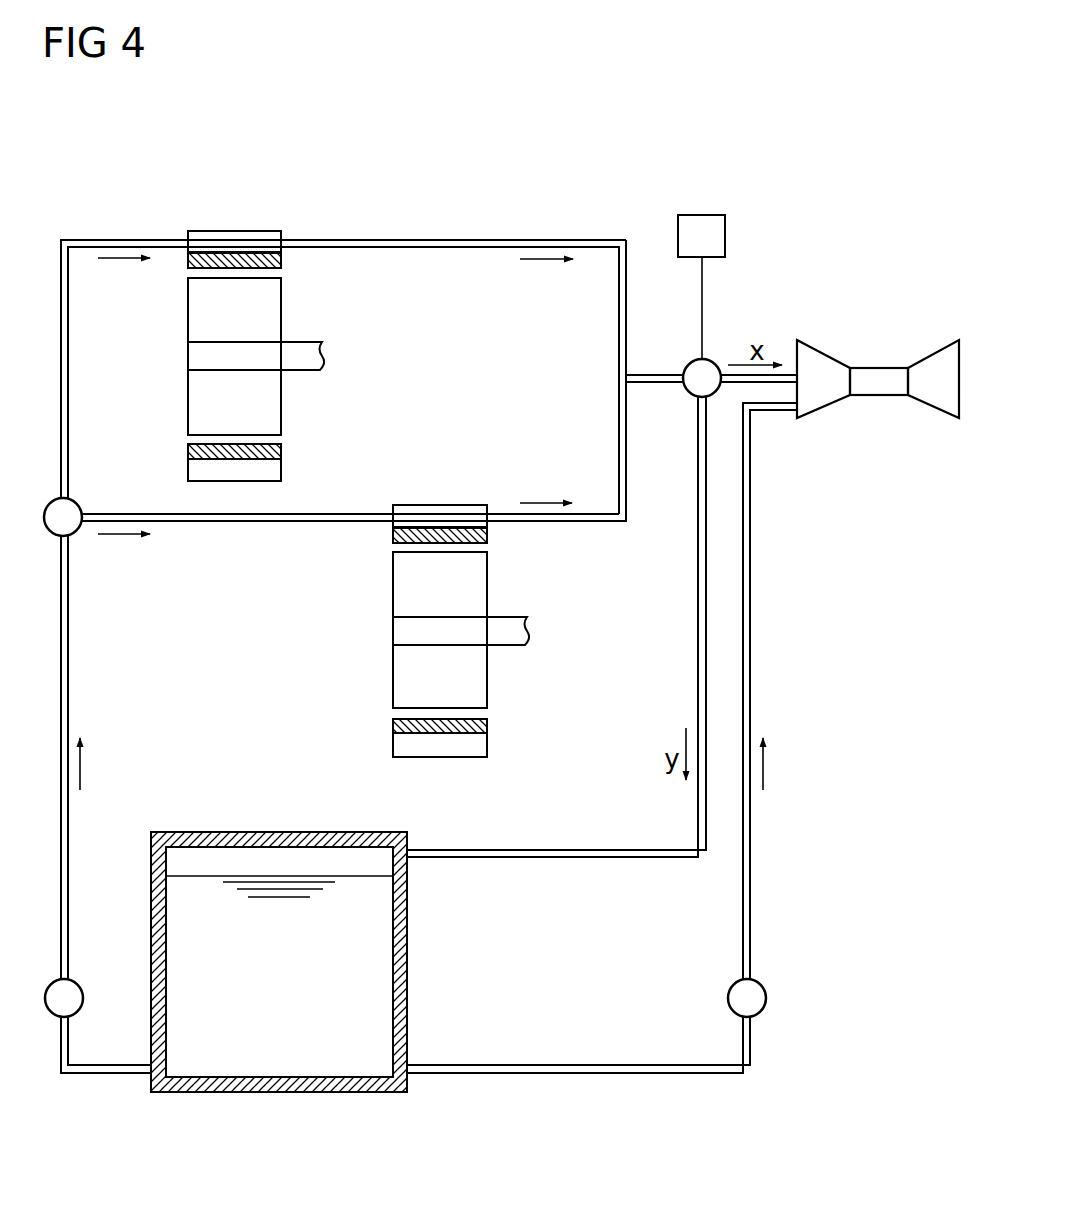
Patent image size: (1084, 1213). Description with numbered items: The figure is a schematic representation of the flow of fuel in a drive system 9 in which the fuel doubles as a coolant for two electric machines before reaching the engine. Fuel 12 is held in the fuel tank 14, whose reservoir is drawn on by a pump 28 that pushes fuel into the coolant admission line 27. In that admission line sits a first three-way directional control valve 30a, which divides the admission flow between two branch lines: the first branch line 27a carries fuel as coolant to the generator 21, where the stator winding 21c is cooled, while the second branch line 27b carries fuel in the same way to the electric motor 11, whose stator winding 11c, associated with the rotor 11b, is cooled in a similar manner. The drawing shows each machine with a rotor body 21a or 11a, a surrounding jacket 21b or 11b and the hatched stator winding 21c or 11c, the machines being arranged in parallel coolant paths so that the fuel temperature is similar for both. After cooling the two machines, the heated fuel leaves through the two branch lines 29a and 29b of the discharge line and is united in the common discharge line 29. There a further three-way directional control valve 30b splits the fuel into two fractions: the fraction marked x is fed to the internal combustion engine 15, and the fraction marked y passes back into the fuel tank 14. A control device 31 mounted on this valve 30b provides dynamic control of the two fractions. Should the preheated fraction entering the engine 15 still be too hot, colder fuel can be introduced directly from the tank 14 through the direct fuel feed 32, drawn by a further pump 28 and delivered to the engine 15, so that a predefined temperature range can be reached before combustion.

The drive system 9 is at (104, 172).
The electric motor 11 is at (485, 598).
The rotor of second electric machine 11a is at (488, 575).
The rotor 11b is at (488, 507).
The stator winding 11c is at (488, 534).
The fuel 12 is at (265, 1016).
The fuel tank 14 is at (289, 1080).
The internal combustion engine 15 is at (958, 332).
The generator 21 is at (279, 324).
The rotor of first electric machine 21a is at (282, 297).
The cooling jacket of first electric machine 21b is at (282, 232).
The stator winding 21c is at (282, 260).
The coolant admission line 27 is at (69, 913).
The first branch line 27a is at (69, 352).
The second branch line 27b is at (204, 522).
The pump 28 is at (84, 998).
The common discharge line 29 is at (657, 384).
The first branch line of the discharge line 29a is at (448, 248).
The second branch line of the discharge line 29b is at (619, 405).
The first three-way directional control valve 30a is at (74, 498).
The three-way directional control valve 30b is at (713, 363).
The control device 31 is at (702, 214).
The direct fuel feed 32 is at (751, 665).